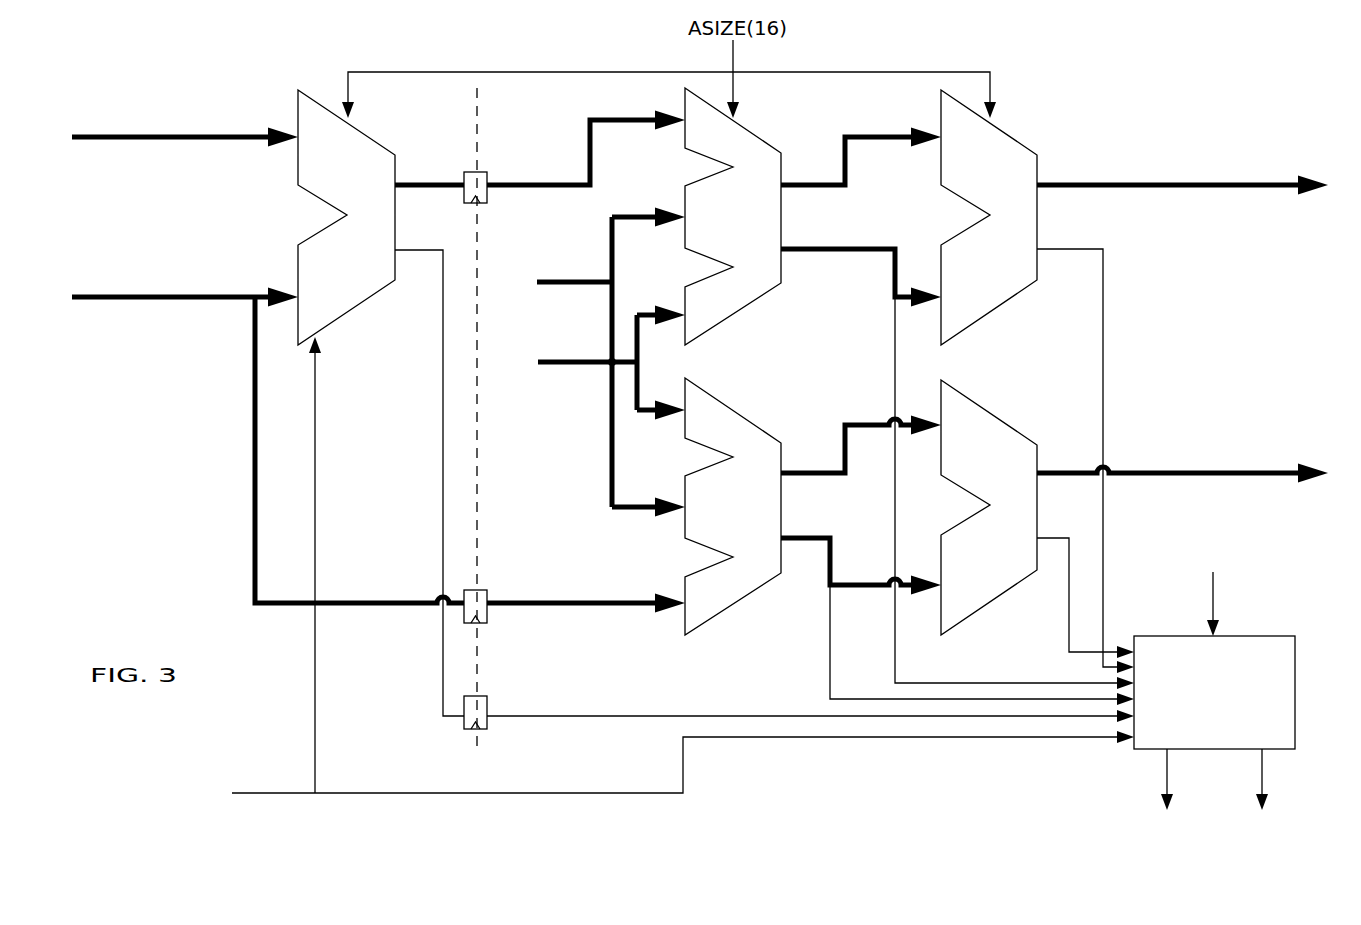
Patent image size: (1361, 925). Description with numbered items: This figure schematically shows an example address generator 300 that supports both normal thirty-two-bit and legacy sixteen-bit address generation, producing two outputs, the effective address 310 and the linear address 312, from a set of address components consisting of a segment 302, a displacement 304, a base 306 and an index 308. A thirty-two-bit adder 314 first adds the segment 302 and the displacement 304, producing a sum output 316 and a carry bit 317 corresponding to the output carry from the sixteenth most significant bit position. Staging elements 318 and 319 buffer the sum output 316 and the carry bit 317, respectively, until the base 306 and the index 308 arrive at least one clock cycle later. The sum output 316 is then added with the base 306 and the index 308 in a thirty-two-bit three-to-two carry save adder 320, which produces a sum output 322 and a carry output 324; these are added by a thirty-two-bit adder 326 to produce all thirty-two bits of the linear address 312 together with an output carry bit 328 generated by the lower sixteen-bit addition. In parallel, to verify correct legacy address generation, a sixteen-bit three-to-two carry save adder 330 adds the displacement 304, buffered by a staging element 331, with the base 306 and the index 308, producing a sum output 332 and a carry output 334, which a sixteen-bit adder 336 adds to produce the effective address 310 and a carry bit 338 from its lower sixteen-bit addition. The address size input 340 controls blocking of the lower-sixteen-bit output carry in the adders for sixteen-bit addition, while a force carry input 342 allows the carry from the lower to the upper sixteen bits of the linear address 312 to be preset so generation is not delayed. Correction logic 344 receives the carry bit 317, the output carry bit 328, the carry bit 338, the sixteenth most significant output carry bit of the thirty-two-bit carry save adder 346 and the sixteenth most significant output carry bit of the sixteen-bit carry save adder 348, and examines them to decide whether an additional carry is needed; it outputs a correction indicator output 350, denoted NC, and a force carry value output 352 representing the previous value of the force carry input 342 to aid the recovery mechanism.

The address generator 300 is at (1193, 87).
The segment 302 is at (168, 144).
The displacement 304 is at (244, 436).
The base 306 is at (588, 362).
The index 308 is at (584, 363).
The effective address 310 is at (1183, 480).
The linear address 312 is at (1182, 192).
The 32-bit adder 314 is at (368, 217).
The sum output 316 is at (540, 148).
The carry bit 317 is at (764, 468).
The staging element 318 is at (512, 172).
The staging element 319 is at (513, 699).
The 32-bit 3:2 carry save adder 320 is at (753, 216).
The sum output 322 is at (861, 172).
The carry output 324 is at (861, 264).
The 32-bit adder 326 is at (1012, 217).
The output carry bit 328 is at (1085, 446).
The 16-bit 3:2 carry save adder 330 is at (723, 506).
The staging element 331 is at (574, 602).
The sum output 332 is at (861, 460).
The carry output 334 is at (861, 553).
The 16-bit adder 336 is at (1010, 507).
The carry bit 338 is at (1107, 581).
The input ASIZE(16) 340 is at (805, 340).
The force carry input 342 is at (663, 578).
The correction logic 344 is at (1236, 679).
The LA_CSA_COUT(15) 346 is at (976, 493).
The EA_CSA_COUT(15) 348 is at (944, 645).
The correction indicator output 350 is at (1293, 795).
The force carry value output 352 is at (1139, 795).